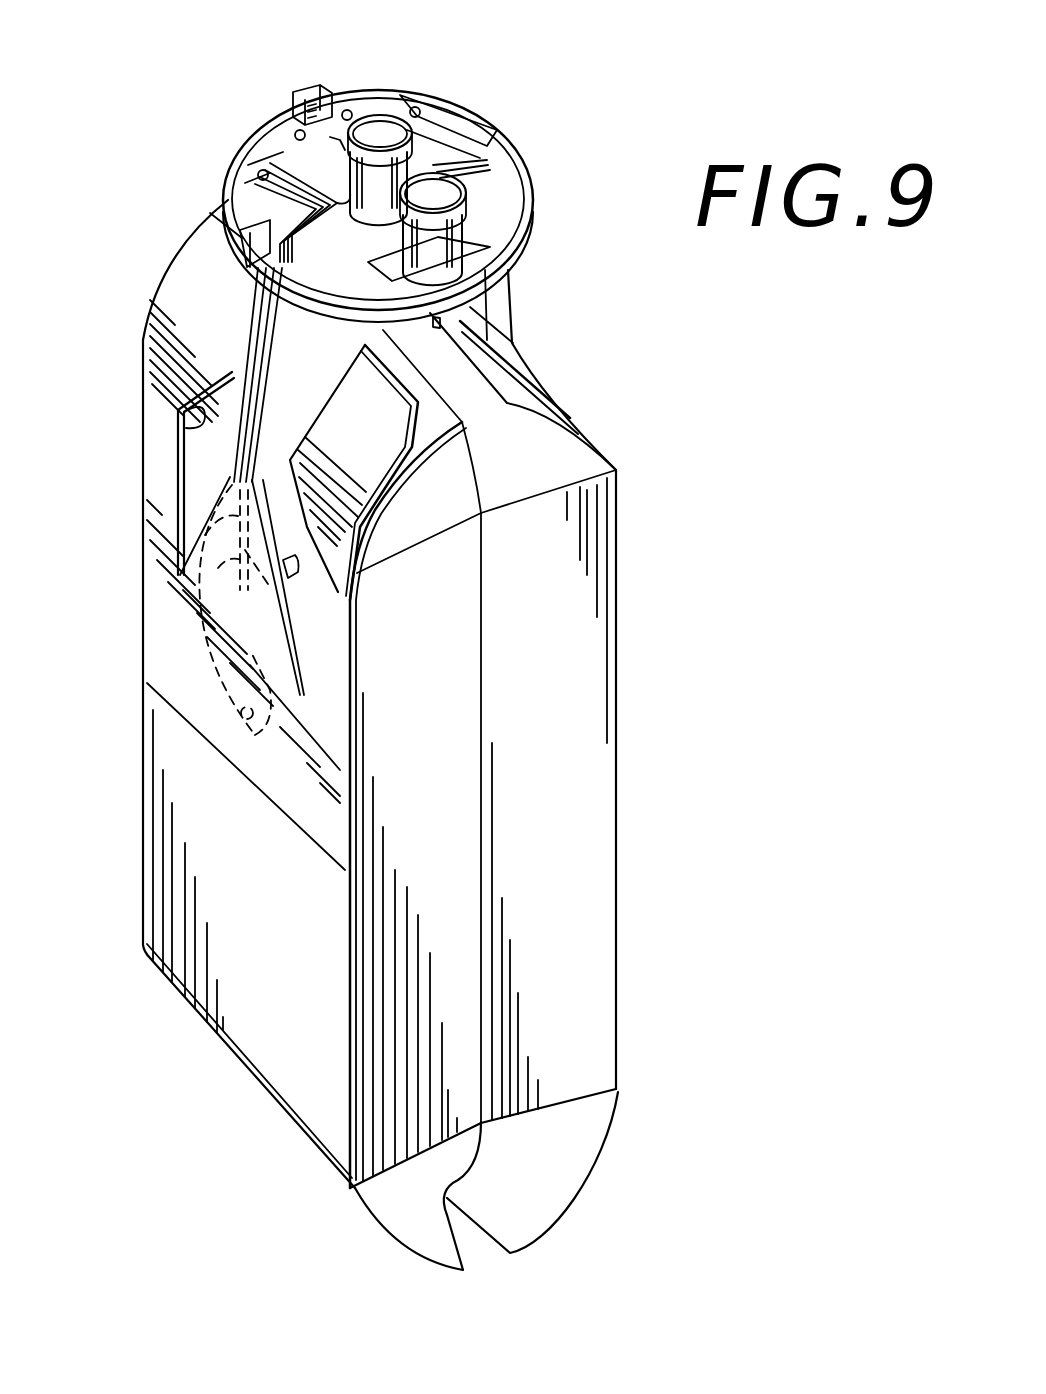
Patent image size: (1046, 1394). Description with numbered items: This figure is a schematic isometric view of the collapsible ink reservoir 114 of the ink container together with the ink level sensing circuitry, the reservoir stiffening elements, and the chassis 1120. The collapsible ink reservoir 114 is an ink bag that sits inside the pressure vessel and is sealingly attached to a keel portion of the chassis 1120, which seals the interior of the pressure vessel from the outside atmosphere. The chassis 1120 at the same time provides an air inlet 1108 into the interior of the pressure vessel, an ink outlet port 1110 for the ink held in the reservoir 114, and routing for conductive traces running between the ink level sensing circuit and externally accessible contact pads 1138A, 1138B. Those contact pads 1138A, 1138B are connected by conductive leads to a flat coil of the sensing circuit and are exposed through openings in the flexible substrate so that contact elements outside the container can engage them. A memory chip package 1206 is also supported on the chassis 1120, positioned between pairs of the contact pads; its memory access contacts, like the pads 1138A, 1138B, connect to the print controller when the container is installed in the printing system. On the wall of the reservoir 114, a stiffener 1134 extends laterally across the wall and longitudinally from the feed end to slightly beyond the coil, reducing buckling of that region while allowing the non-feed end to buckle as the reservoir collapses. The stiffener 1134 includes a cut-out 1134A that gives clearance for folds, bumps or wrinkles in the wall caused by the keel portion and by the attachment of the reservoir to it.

The collapsible ink reservoir 114 is at (597, 983).
The chassis 1120 is at (474, 113).
The ink outlet port 1110 is at (383, 124).
The air inlet 1108 is at (467, 222).
The memory chip package 1206 is at (336, 100).
The externally accessible contact pad 1138A is at (276, 165).
The externally accessible contact pad 1138B is at (290, 150).
The stiffener 1134 is at (157, 658).
The cut-out 1134A is at (182, 428).